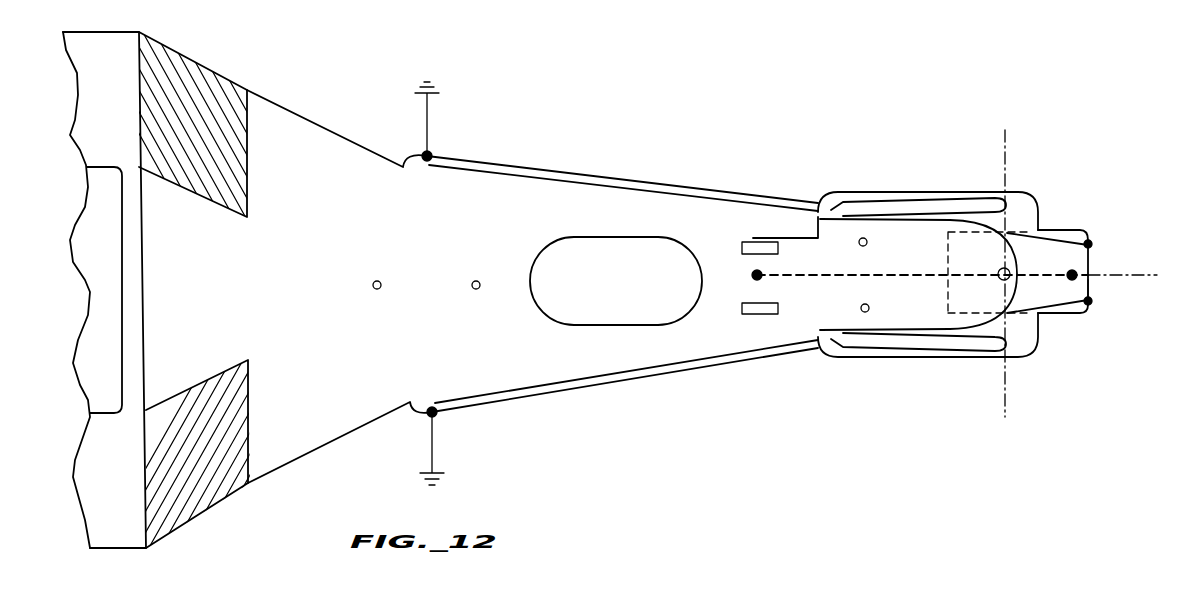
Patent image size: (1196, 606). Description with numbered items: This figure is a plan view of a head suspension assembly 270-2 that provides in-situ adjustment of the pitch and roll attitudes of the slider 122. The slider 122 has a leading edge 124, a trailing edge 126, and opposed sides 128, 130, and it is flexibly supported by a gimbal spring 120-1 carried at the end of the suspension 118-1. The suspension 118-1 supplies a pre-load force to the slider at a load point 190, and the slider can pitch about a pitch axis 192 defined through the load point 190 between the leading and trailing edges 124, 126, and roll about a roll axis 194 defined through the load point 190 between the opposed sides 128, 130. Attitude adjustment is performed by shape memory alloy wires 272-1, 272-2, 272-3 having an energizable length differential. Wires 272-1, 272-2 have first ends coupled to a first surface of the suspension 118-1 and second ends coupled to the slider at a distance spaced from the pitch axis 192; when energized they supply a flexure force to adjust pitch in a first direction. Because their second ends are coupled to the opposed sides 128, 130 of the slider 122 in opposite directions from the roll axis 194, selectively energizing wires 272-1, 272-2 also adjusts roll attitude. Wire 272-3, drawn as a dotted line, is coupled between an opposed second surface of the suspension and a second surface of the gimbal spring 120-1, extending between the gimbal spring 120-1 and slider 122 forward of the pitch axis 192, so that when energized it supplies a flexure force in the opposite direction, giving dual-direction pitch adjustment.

The suspension 118-1 is at (543, 229).
The gimbal spring 120-1 is at (932, 191).
The slider 122 is at (1096, 250).
The leading edge 124 is at (942, 262).
The trailing edge 126 is at (1092, 282).
The opposed side 128 is at (1055, 229).
The opposed side 130 is at (1055, 316).
The load point 190 is at (1015, 235).
The pitch axis 192 is at (1005, 408).
The roll axis 194 is at (1115, 266).
The head suspension assembly 270-2 is at (757, 271).
The shape memory alloy wire 272-1 is at (592, 184).
The shape memory alloy wire 272-2 is at (643, 372).
The shape memory alloy wire 272-3 is at (848, 276).